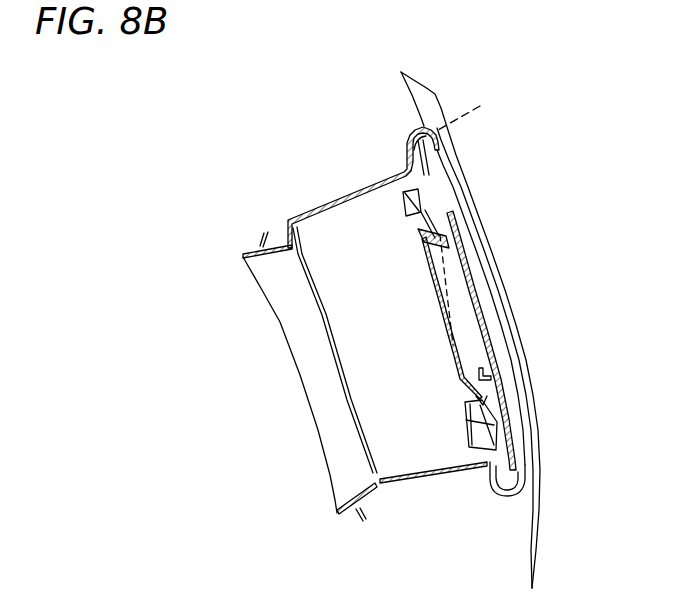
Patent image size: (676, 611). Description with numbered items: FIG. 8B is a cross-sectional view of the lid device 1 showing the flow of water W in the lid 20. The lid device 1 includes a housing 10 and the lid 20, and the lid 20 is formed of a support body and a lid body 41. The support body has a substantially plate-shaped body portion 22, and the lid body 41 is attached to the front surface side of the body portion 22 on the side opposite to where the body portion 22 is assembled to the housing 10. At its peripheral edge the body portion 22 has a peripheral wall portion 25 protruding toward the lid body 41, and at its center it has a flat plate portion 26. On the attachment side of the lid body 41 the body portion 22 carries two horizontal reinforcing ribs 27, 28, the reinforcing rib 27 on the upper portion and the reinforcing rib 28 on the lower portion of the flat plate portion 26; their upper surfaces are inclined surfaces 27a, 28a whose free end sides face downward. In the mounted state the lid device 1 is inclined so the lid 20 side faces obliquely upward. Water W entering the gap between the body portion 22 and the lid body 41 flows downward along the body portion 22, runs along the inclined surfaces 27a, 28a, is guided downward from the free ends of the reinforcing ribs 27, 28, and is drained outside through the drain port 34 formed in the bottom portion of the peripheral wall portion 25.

The lid device 1 is at (502, 122).
The housing 10 is at (340, 199).
The lid 20 is at (541, 462).
The body portion 22 is at (425, 183).
The peripheral wall portion 25 is at (487, 468).
The flat plate portion 26 is at (440, 282).
The reinforcing rib 27 is at (433, 214).
The inclined surface 27a is at (432, 210).
The reinforcing rib 28 is at (492, 404).
The inclined surface 28a is at (483, 382).
The drain port 34 is at (491, 438).
The lid body 41 is at (487, 338).
The water W is at (452, 309).